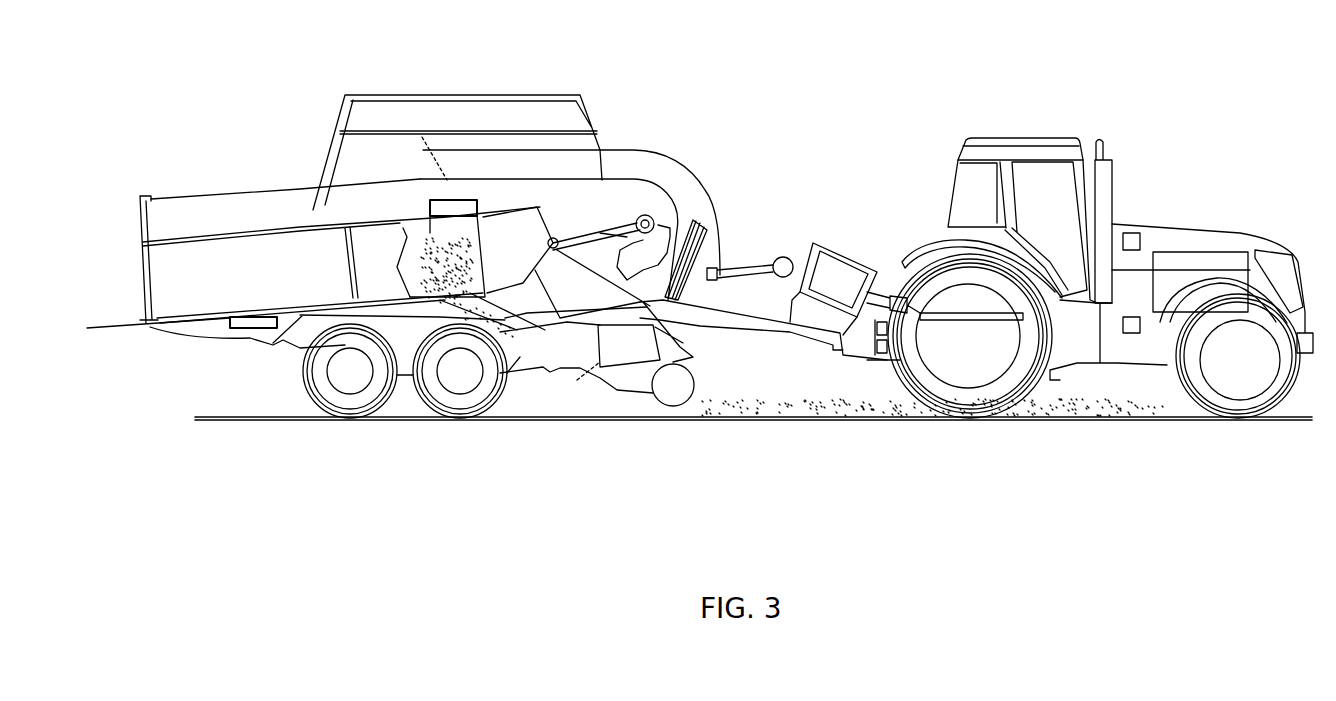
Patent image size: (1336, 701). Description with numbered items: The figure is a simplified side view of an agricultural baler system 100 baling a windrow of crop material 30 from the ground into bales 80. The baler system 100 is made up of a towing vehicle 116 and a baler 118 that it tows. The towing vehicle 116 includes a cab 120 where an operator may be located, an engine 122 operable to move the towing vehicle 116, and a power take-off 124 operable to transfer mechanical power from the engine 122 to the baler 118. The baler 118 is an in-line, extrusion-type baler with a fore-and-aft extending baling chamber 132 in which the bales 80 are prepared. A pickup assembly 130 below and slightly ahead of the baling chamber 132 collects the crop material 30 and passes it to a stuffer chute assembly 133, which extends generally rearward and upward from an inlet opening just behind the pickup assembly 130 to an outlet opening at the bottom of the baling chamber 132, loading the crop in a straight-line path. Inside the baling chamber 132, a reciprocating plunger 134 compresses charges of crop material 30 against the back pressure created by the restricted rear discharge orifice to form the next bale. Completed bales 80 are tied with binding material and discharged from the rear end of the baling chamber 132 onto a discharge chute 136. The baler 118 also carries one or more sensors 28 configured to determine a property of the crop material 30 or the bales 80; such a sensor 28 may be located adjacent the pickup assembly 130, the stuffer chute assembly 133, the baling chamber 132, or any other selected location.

The sensor 28 is at (450, 200).
The crop material 30 is at (801, 420).
The bale 80 is at (259, 290).
The agricultural baler system 100 is at (1090, 253).
The towing vehicle 116 is at (1210, 190).
The baler 118 is at (740, 186).
The cab 120 is at (1030, 135).
The engine 122 is at (1225, 258).
The power take-off (PTO) 124 is at (990, 328).
The pickup assembly 130 is at (655, 395).
The baling chamber 132 is at (428, 242).
The stuffer chute assembly 133 is at (600, 362).
The reciprocating plunger 134 is at (537, 267).
The discharge chute 136 is at (240, 192).